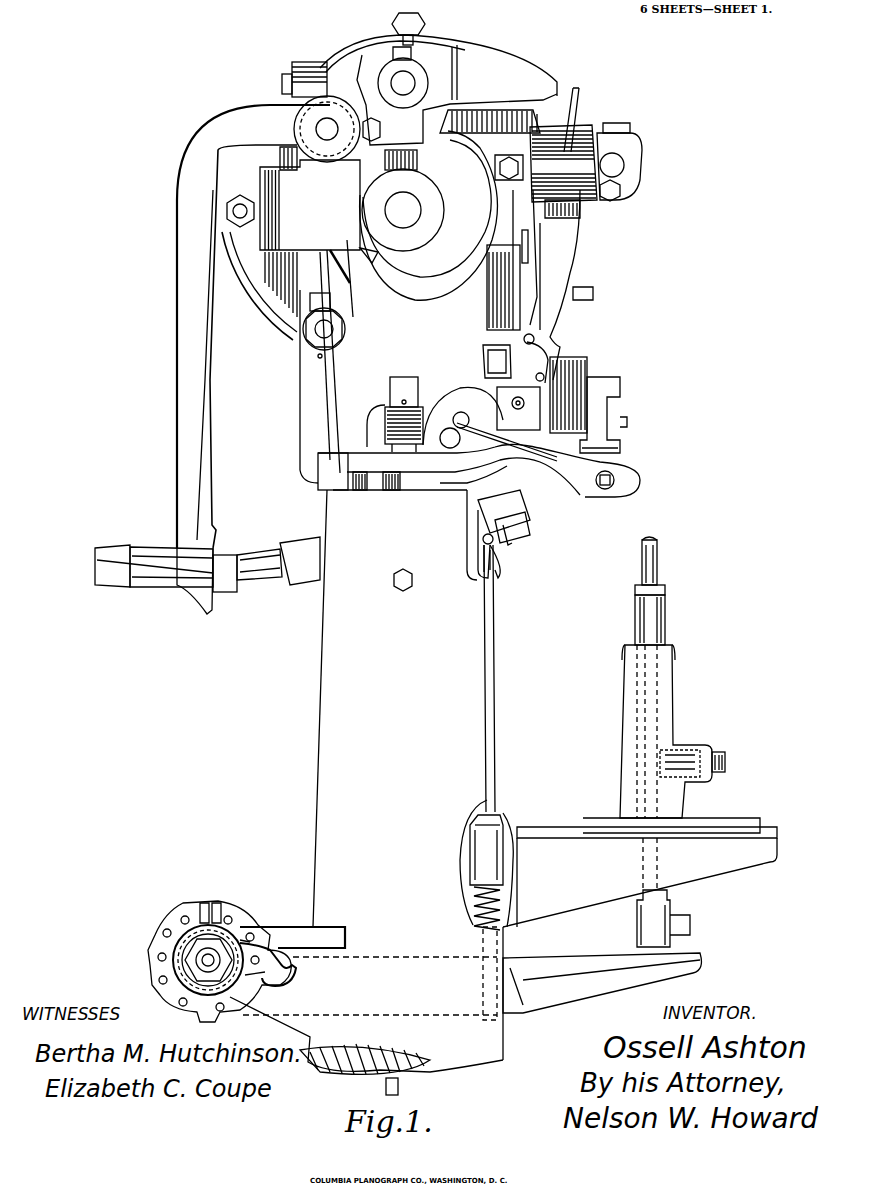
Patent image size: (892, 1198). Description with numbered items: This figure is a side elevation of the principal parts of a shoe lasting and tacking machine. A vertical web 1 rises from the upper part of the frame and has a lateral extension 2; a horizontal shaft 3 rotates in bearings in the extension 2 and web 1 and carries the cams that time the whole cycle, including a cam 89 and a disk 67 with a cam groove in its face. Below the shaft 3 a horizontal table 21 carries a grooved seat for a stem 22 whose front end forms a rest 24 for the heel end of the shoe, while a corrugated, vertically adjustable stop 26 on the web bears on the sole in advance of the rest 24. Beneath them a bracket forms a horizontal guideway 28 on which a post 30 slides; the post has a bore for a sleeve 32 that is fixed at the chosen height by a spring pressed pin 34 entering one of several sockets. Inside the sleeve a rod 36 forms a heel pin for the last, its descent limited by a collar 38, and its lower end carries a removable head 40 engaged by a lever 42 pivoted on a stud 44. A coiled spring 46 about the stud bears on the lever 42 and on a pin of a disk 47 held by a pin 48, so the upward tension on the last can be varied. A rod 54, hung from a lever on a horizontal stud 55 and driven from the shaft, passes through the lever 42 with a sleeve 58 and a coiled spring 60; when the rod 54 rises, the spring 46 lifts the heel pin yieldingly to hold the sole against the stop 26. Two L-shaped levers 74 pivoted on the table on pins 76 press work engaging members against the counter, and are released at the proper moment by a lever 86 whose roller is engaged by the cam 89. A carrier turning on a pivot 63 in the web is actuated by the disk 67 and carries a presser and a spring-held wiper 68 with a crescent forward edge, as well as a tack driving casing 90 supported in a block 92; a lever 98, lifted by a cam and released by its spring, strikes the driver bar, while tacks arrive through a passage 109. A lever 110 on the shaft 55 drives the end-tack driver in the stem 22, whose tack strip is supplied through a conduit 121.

The vertical web 1 is at (473, 302).
The lateral extension 2 is at (288, 229).
The horizontal shaft 3 is at (402, 212).
The horizontal table 21 is at (443, 490).
The stem 22 is at (293, 540).
The rest 24 is at (527, 517).
The stop 26 is at (613, 440).
The horizontal guideway 28 is at (543, 827).
The post 30 is at (677, 690).
The sleeve 32 is at (667, 620).
The spring pressed pin 34 is at (727, 752).
The rod 36 is at (660, 563).
The collar 38 is at (667, 588).
The removable head 40 is at (670, 912).
The lever 42 is at (557, 1000).
The stud 44 is at (208, 960).
The coiled spring 46 is at (220, 930).
The disk 47 is at (177, 920).
The pin 48 is at (257, 963).
The rod 54 is at (500, 610).
The horizontal stud 55 is at (327, 130).
The sleeve 58 is at (502, 828).
The coiled spring 60 is at (507, 907).
The pivot 63 is at (618, 163).
The disk 67 is at (373, 292).
The wiper 68 is at (567, 483).
The L-shaped levers 74 is at (548, 480).
The pins 76 is at (395, 388).
The lever 86 is at (297, 385).
The cam 89 is at (457, 238).
The casing 90 is at (563, 277).
The block 92 is at (540, 403).
The lever 98 is at (438, 60).
The passage 109 is at (485, 358).
The lever 110 is at (180, 272).
The conduit 121 is at (527, 515).